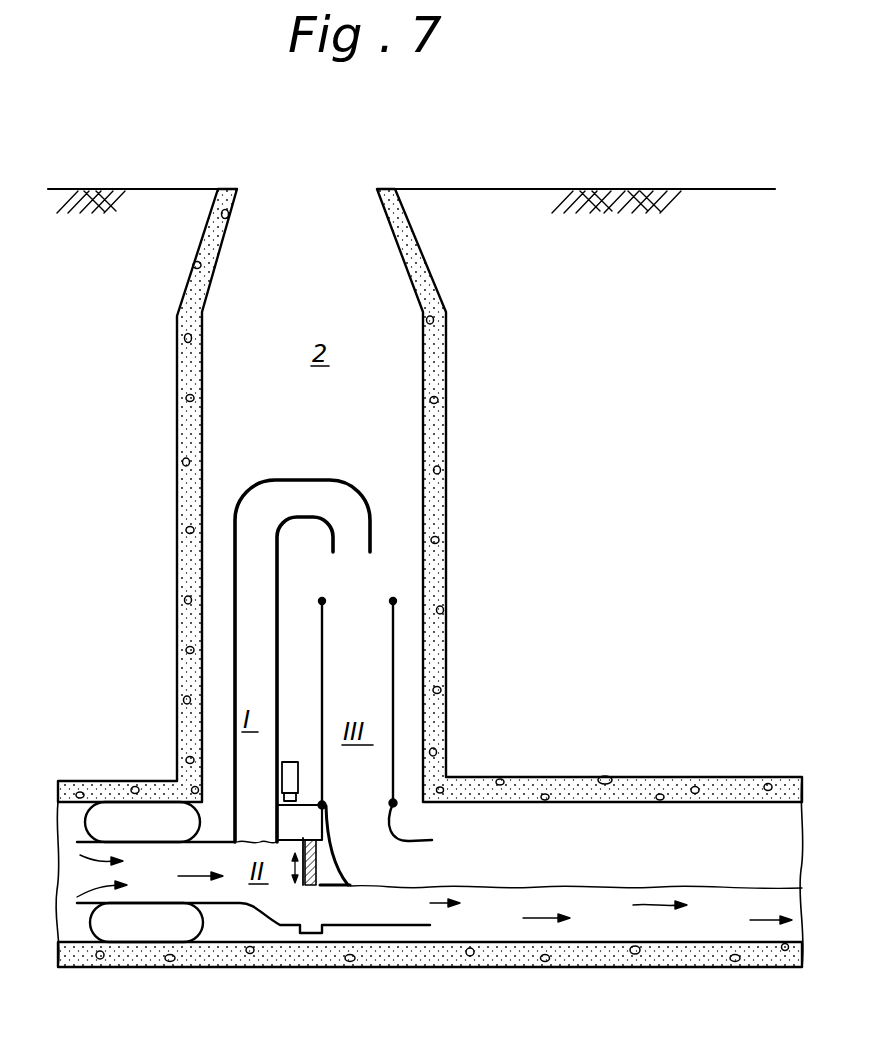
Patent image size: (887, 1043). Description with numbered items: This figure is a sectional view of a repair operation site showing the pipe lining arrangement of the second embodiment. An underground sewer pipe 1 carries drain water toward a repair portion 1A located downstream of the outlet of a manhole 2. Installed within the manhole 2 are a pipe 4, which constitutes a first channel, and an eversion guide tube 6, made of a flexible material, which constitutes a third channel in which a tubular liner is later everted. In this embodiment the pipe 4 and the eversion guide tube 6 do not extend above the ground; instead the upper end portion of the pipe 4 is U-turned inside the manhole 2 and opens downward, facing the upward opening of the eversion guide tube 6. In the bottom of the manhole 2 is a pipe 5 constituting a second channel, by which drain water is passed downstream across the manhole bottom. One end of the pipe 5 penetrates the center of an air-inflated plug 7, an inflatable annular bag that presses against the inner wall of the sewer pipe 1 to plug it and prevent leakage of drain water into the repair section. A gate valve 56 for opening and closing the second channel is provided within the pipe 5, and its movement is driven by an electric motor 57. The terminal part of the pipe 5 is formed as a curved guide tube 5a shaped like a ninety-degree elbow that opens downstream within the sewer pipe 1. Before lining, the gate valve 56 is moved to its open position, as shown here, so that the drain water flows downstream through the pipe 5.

The sewer pipe 1 is at (585, 777).
The repair portion 1A is at (634, 803).
The manhole 2 is at (319, 354).
The pipe 4 is at (274, 480).
The pipe 5 is at (396, 928).
The curved guide tube 5a is at (343, 877).
The eversion guide tube 6 is at (320, 665).
The air-inflated plug 7 is at (153, 932).
The gate valve 56 is at (309, 885).
The electric motor 57 is at (290, 762).